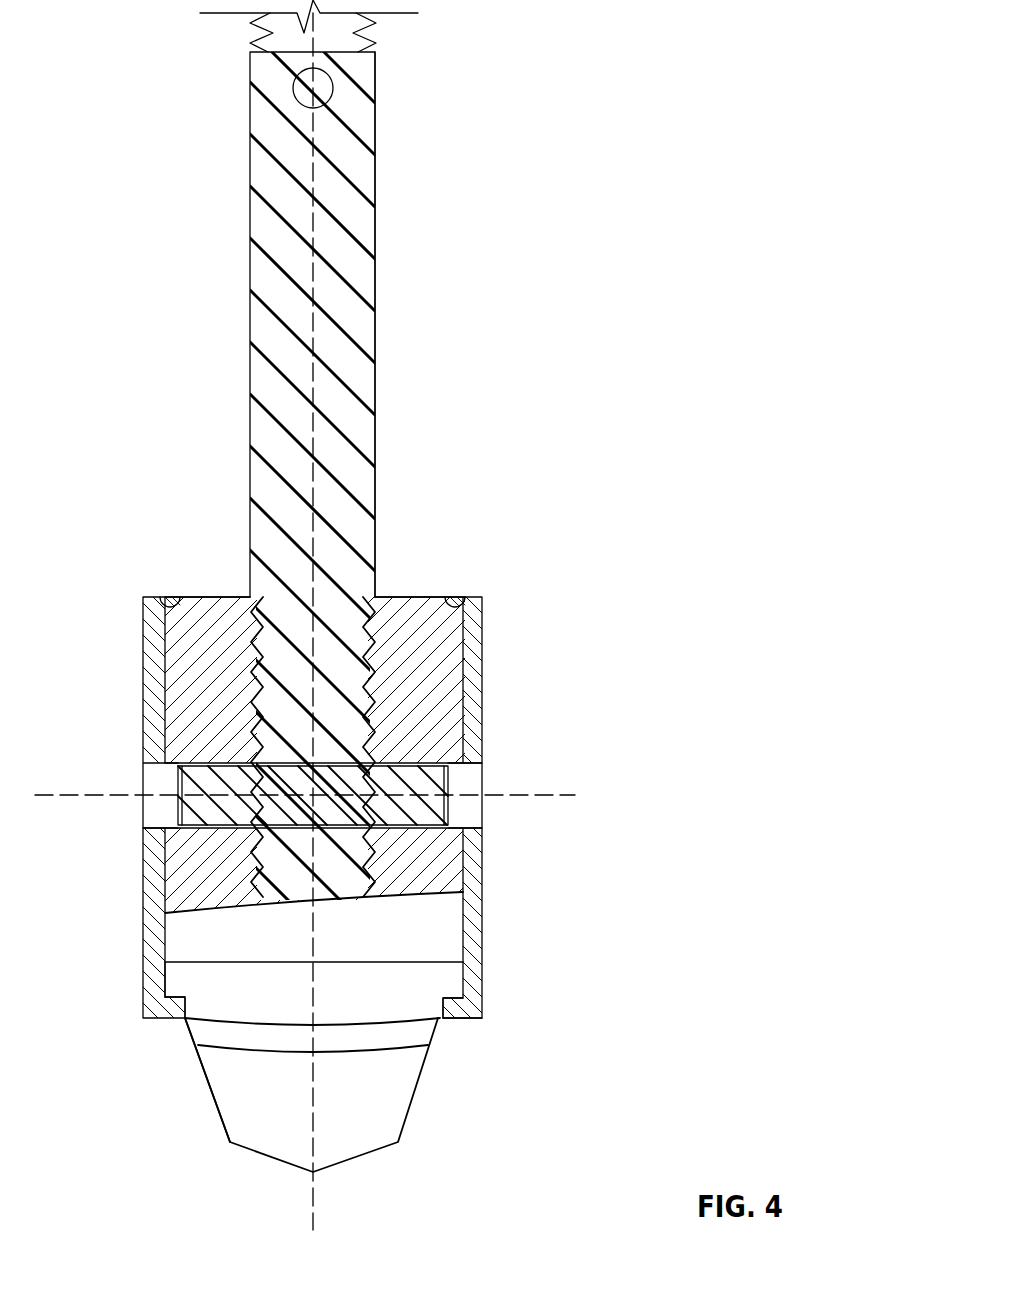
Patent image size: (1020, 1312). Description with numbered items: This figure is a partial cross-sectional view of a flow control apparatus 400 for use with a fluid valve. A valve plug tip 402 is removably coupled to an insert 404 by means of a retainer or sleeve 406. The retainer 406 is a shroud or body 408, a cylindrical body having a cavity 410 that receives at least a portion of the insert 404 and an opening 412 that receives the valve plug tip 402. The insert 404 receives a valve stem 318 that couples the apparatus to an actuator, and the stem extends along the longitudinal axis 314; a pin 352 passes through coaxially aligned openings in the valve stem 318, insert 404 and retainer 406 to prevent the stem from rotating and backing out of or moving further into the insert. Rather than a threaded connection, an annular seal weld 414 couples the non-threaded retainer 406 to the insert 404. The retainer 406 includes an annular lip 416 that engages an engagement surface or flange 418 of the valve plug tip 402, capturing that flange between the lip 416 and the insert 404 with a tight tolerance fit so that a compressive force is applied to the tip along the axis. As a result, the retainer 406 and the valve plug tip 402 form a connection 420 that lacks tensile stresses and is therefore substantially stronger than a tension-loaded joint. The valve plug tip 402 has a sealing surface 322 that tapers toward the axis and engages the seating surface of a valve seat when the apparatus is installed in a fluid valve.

The flow control apparatus 400 is at (650, 76).
The axis 314 is at (313, 230).
The valve stem 318 is at (375, 380).
The seal weld 414 is at (458, 597).
The insert 404 is at (450, 670).
The pin 352 is at (440, 770).
The shroud or body 408 is at (475, 876).
The cavity 410 is at (463, 948).
The retainer or sleeve 406 is at (485, 940).
The opening 412 is at (185, 1003).
The engagement surface or flange 418 is at (178, 977).
The lip 416 is at (450, 1010).
The connection 420 is at (512, 1005).
The valve plug tip 402 is at (398, 1108).
The sealing surface 322 is at (215, 1100).